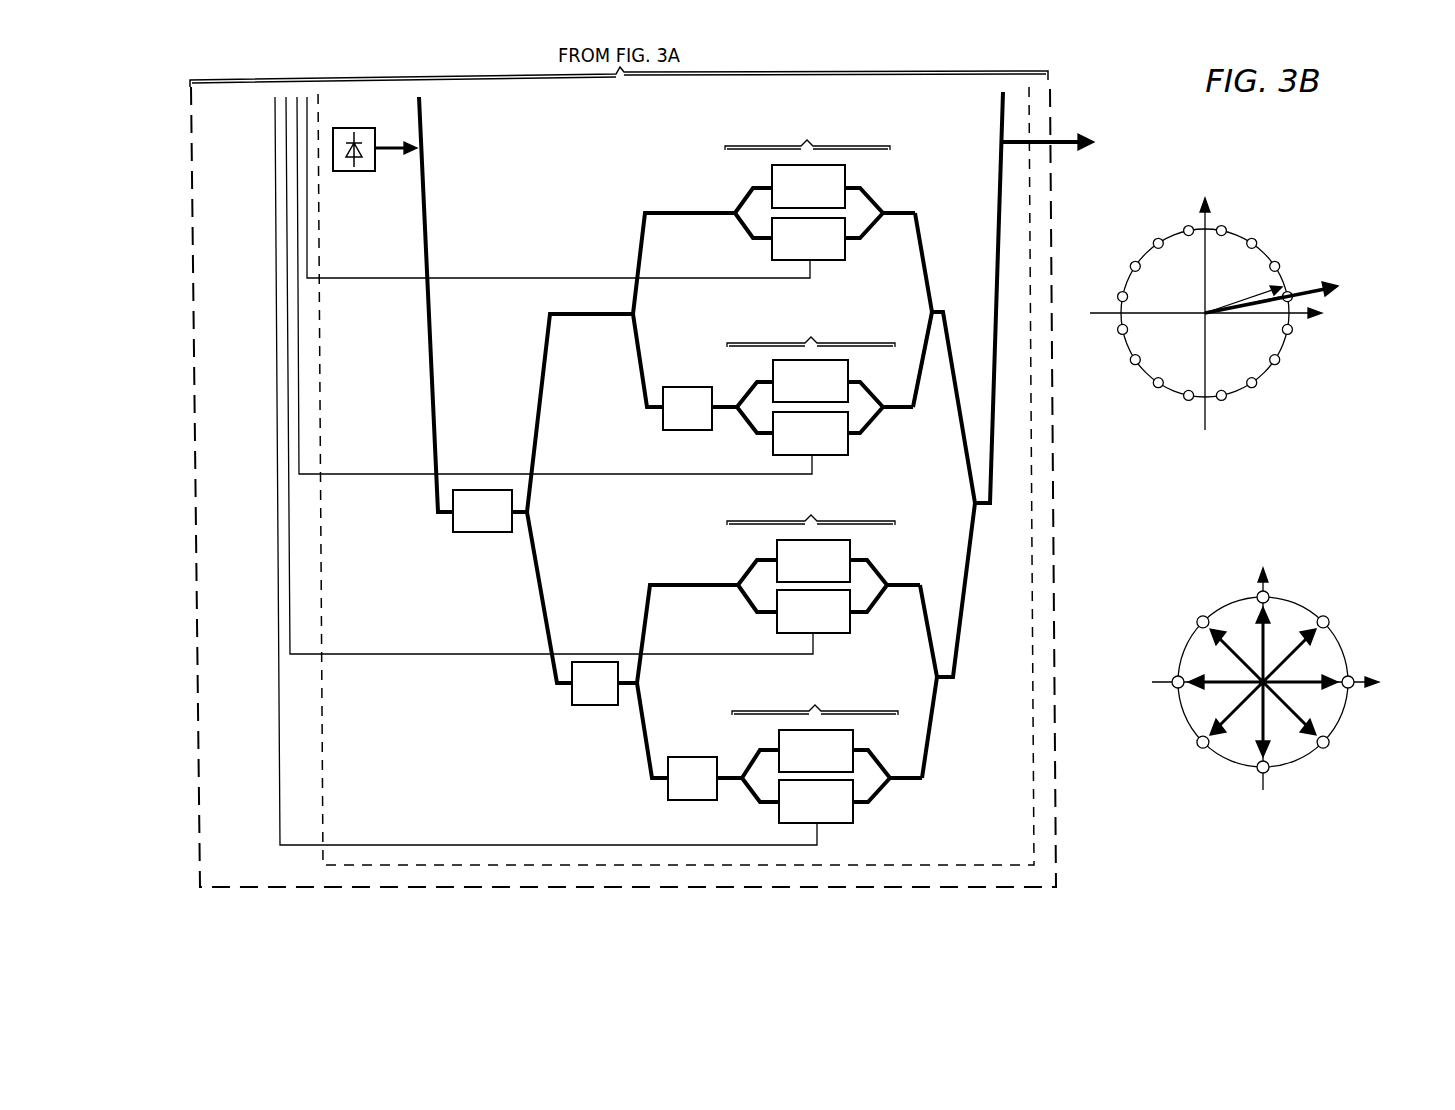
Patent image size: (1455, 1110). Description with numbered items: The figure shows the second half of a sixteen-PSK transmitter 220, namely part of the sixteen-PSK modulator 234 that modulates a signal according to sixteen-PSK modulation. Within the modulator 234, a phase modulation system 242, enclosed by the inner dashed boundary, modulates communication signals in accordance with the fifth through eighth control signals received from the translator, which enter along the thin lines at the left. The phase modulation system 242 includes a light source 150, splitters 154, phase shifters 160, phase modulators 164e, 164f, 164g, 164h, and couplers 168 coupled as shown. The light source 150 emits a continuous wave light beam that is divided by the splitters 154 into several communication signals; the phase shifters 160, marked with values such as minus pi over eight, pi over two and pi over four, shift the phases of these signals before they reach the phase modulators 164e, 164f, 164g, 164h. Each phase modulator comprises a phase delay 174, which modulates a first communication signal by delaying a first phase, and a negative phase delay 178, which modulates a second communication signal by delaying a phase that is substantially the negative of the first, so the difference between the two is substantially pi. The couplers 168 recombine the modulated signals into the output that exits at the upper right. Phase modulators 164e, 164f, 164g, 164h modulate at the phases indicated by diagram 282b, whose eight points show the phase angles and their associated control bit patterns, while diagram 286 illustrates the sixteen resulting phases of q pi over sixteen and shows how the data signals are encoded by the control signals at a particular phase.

The light source 150 is at (365, 172).
The splitters 154 is at (424, 150).
The phase shifters 160 is at (481, 534).
The phase modulator 164e is at (820, 175).
The phase modulator 164f is at (820, 371).
The phase modulator 164g is at (823, 550).
The phase modulator 164h is at (827, 739).
The couplers 168 is at (1000, 142).
The phase delay 174 is at (772, 178).
The negative phase delay 178 is at (845, 250).
The 16-PSK transmitter 220 is at (170, 532).
The 16-PSK modulator 234 is at (191, 772).
The phase modulation system 242 is at (1042, 498).
The diagram 282b is at (1335, 576).
The diagram 286 is at (1155, 218).